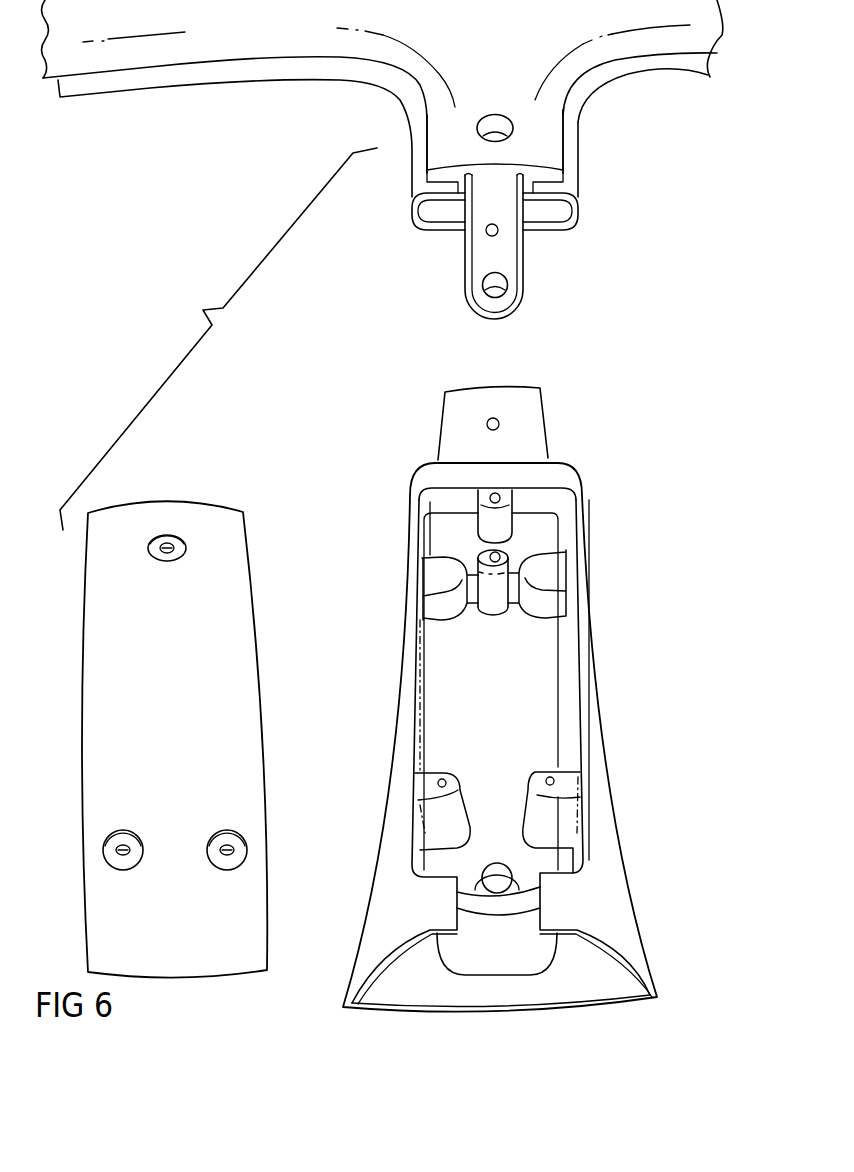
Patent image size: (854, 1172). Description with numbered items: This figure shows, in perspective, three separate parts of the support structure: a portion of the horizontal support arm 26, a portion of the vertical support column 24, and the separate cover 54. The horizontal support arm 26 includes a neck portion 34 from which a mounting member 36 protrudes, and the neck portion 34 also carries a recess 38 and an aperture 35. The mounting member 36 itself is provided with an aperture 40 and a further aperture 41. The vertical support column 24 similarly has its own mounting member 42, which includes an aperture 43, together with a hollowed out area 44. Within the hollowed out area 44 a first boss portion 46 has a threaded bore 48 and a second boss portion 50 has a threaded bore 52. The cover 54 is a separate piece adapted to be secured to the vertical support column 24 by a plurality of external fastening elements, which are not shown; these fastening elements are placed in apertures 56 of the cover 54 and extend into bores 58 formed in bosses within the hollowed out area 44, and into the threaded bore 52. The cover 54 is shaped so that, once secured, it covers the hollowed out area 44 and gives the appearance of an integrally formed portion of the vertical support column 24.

The vertical support column 24 is at (390, 692).
The horizontal support arm 26 is at (508, 61).
The neck portion 34 is at (528, 138).
The aperture 35 is at (507, 126).
The mounting member 36 is at (507, 253).
The recess 38 is at (560, 201).
The aperture 40 is at (498, 285).
The aperture 41 is at (495, 224).
The mounting member 42 is at (527, 433).
The aperture 43 is at (488, 421).
The hollowed out area 44 is at (522, 698).
The first boss portion 46 is at (495, 590).
The threaded bore 48 is at (488, 557).
The second boss portion 50 is at (487, 522).
The threaded bore 52 is at (500, 495).
The cover 54 is at (194, 737).
The apertures 56 is at (167, 556).
The bores 58 is at (445, 778).